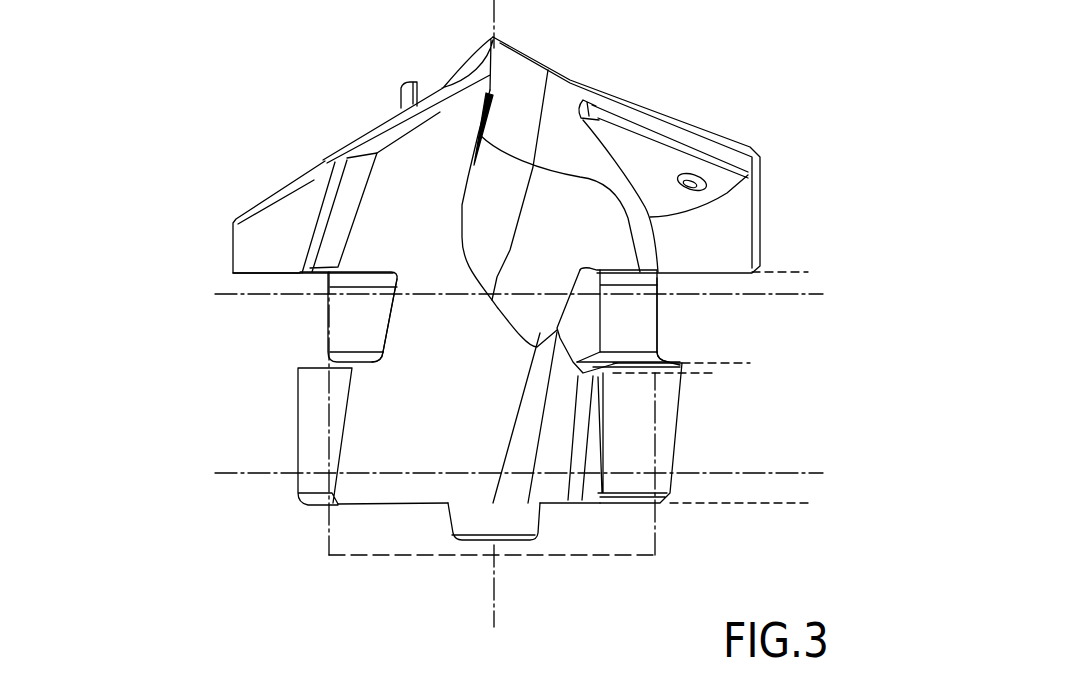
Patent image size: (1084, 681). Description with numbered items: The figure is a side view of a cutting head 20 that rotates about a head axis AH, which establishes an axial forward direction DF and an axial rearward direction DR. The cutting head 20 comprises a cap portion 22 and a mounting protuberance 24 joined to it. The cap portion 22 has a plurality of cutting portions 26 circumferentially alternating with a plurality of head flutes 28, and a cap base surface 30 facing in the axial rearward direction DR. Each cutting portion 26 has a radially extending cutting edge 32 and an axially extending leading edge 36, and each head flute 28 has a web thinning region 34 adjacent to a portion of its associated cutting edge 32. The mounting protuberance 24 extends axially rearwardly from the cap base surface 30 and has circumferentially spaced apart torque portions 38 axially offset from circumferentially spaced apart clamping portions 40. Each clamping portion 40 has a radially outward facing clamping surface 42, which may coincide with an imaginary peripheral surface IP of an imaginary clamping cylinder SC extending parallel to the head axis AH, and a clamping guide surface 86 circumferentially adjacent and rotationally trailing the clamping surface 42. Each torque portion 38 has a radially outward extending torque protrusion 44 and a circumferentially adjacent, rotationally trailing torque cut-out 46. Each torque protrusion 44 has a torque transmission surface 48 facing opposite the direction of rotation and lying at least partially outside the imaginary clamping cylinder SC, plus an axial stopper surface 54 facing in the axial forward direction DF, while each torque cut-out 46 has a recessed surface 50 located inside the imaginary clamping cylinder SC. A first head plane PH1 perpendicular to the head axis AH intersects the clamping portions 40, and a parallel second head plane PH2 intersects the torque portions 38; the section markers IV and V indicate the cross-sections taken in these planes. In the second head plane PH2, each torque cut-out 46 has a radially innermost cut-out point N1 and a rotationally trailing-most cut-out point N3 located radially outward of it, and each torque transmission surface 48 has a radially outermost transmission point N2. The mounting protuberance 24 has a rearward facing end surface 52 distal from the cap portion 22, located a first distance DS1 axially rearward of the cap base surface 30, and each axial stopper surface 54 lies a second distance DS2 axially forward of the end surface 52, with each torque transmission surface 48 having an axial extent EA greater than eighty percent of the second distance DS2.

The cutting head 20 is at (713, 117).
The cap portion 22 is at (790, 207).
The mounting protuberance 24 is at (887, 350).
The cutting portion 26 is at (727, 217).
The head flute 28 is at (447, 271).
The cap base surface 30 is at (282, 274).
The cutting edge 32 is at (445, 112).
The web thinning region 34 is at (538, 123).
The leading edge 36 is at (347, 210).
The torque portion 38 is at (297, 440).
The clamping portion 40 is at (328, 312).
The clamping surface 42 is at (372, 336).
The torque protrusion 44 is at (313, 405).
The torque cut-out 46 is at (557, 443).
The torque transmission surface 48 is at (572, 455).
The recessed surface 50 is at (530, 469).
The end surface 52 is at (372, 505).
The axial stopper surface 54 is at (325, 354).
The clamping guide surface 86 is at (598, 324).
The axial forward direction DF is at (58, 238).
The axial rearward direction DR is at (58, 320).
The first head plane PH1 is at (847, 294).
The second head plane PH2 is at (847, 473).
The section IV is at (203, 299).
The section V is at (203, 478).
The first distance DS1 is at (793, 273).
The second distance DS2 is at (740, 363).
The axial extent EA is at (703, 373).
The imaginary peripheral surface IP is at (329, 548).
The radially innermost cut-out point N1 is at (541, 475).
The radially outermost transmission point N2 is at (600, 475).
The rotationally trailing-most cut-out point N3 is at (499, 473).
The imaginary clamping cylinder SC is at (634, 557).
The head axis AH is at (493, 641).